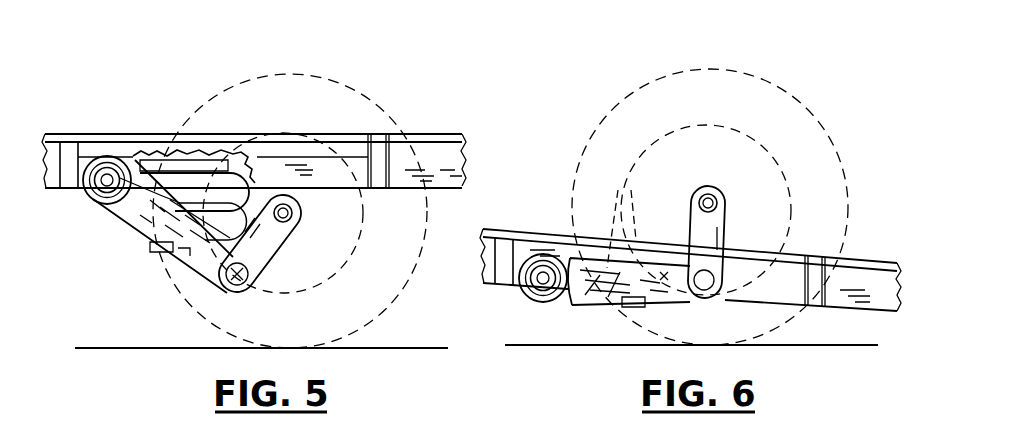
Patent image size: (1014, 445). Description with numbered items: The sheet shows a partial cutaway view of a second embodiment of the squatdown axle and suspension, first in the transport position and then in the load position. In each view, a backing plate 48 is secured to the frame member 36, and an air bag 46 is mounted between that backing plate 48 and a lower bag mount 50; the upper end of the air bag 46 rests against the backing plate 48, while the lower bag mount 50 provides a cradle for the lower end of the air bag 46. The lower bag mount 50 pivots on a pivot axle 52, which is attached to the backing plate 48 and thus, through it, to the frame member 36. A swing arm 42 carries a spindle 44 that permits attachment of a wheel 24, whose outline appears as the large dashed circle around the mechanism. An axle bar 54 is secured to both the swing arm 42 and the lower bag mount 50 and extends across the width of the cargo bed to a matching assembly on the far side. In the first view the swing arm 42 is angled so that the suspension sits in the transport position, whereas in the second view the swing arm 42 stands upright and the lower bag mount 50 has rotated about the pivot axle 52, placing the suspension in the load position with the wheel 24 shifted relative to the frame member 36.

In FIG. 5, the wheel 24 is at (303, 70).
In FIG. 6, the wheel 24 is at (718, 67).
In FIG. 5, the frame member 36 is at (467, 152).
In FIG. 6, the frame member 36 is at (887, 273).
In FIG. 5, the swing arm 42 is at (262, 247).
In FIG. 6, the swing arm 42 is at (690, 223).
In FIG. 5, the spindle 44 is at (300, 213).
In FIG. 6, the spindle 44 is at (712, 188).
In FIG. 5, the air bag 46 is at (192, 180).
In FIG. 6, the air bag 46 is at (639, 176).
In FIG. 5, the backing plate 48 is at (177, 157).
In FIG. 6, the backing plate 48 is at (605, 275).
In FIG. 5, the lower bag mount 50 is at (155, 253).
In FIG. 6, the lower bag mount 50 is at (622, 300).
In FIG. 5, the pivot axle 52 is at (105, 188).
In FIG. 6, the pivot axle 52 is at (542, 285).
In FIG. 5, the axle bar 54 is at (175, 294).
In FIG. 6, the axle bar 54 is at (783, 331).